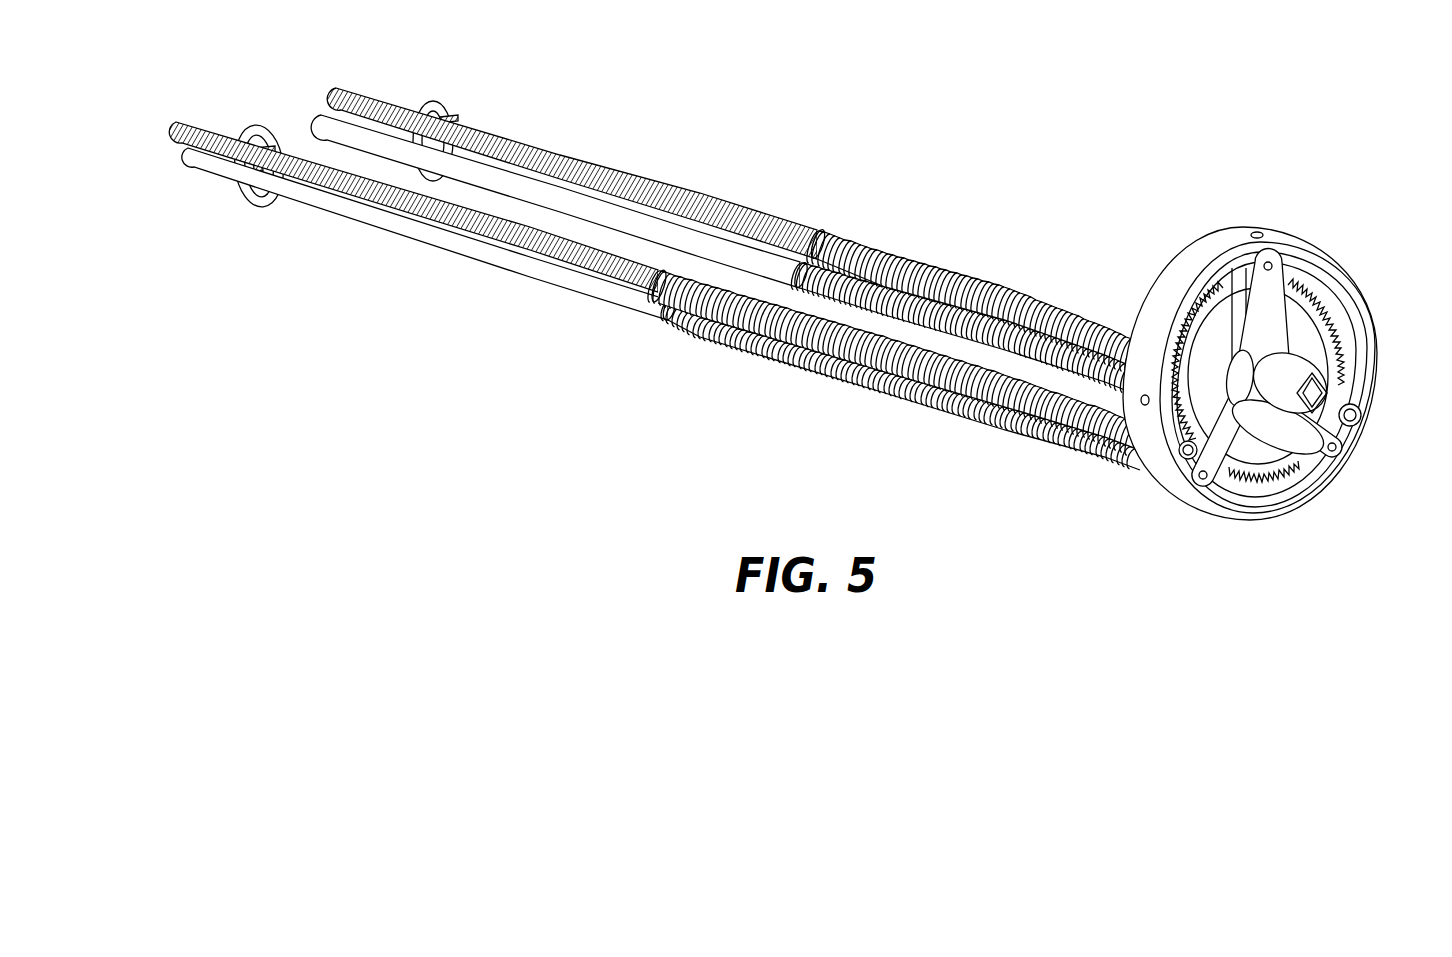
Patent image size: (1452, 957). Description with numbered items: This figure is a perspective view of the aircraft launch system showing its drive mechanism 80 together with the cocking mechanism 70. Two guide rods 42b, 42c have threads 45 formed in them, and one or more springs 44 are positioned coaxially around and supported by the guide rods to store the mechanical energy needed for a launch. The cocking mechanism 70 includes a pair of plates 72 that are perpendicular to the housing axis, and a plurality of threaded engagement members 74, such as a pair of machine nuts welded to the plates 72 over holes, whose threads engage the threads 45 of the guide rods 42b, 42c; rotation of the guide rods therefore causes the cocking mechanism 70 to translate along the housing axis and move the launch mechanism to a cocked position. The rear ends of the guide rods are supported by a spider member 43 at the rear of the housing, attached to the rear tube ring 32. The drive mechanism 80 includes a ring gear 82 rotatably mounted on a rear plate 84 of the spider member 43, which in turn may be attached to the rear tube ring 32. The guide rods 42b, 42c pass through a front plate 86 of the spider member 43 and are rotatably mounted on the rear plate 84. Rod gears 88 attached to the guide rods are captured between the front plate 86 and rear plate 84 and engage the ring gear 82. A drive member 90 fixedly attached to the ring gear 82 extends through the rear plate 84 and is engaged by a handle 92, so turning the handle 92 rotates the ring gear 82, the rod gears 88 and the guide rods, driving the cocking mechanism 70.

The rear tube ring 32 is at (1163, 480).
The guide rod 42b is at (560, 272).
The guide rod 42c is at (640, 175).
The spider member 43 is at (1223, 590).
The spring 44 is at (668, 288).
The threads 45 is at (547, 150).
The cocking mechanism 70 is at (360, 154).
The plate 72 is at (260, 212).
The threaded engagement member 74 is at (270, 128).
The drive mechanism 80 is at (1245, 348).
The ring gear 82 is at (1277, 477).
The rear plate 84 is at (1273, 307).
The front plate 86 is at (1225, 330).
The rod gear 88 is at (1327, 373).
The drive member 90 is at (1293, 363).
The handle 92 is at (1305, 452).